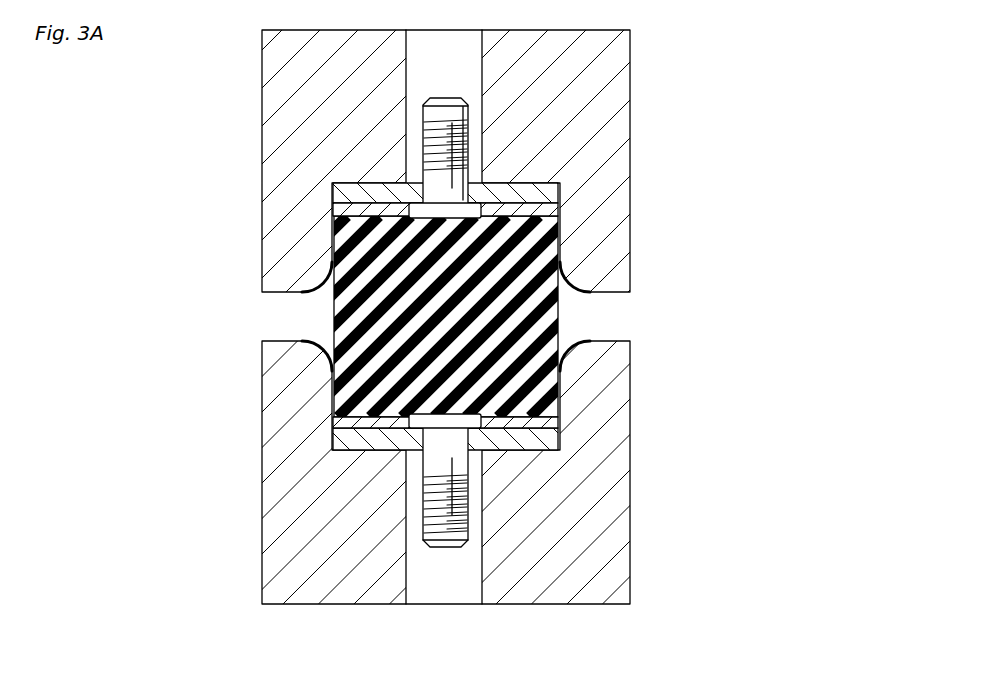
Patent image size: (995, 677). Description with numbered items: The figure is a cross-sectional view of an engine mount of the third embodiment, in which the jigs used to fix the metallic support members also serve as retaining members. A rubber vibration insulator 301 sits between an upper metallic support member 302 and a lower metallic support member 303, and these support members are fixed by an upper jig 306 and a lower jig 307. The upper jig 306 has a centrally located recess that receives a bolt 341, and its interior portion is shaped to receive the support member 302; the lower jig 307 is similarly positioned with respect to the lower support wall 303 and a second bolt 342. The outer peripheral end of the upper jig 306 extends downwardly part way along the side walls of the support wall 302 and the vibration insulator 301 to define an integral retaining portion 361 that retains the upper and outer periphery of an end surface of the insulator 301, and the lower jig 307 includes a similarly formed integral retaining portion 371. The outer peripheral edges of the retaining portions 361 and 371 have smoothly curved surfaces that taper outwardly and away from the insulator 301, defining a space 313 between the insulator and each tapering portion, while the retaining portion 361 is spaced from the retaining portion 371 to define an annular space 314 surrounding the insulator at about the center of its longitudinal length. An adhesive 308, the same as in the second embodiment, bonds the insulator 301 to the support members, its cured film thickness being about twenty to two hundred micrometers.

The rubber vibration insulator 301 is at (336, 304).
The upper metallic support member 302 is at (333, 190).
The lower metallic support member 303 is at (333, 441).
The upper jig 306 is at (631, 60).
The lower jig 307 is at (631, 523).
The adhesive 308 is at (545, 210).
The space 313 is at (328, 347).
The annular space 314 is at (612, 323).
The bolt 341 is at (441, 97).
The bolt 342 is at (443, 548).
The retaining portion 361 is at (310, 270).
The retaining portion 371 is at (280, 379).